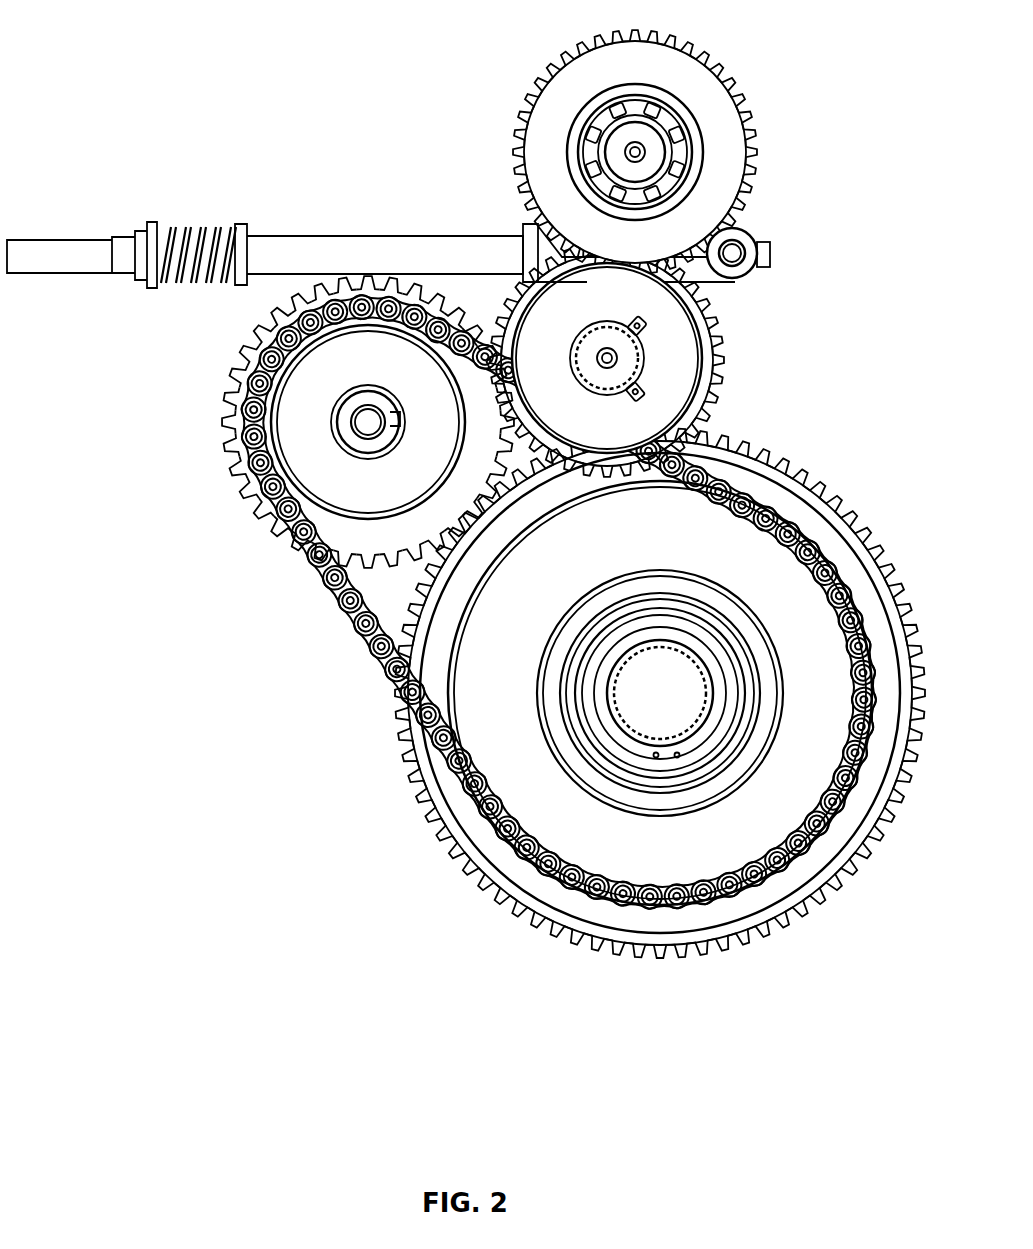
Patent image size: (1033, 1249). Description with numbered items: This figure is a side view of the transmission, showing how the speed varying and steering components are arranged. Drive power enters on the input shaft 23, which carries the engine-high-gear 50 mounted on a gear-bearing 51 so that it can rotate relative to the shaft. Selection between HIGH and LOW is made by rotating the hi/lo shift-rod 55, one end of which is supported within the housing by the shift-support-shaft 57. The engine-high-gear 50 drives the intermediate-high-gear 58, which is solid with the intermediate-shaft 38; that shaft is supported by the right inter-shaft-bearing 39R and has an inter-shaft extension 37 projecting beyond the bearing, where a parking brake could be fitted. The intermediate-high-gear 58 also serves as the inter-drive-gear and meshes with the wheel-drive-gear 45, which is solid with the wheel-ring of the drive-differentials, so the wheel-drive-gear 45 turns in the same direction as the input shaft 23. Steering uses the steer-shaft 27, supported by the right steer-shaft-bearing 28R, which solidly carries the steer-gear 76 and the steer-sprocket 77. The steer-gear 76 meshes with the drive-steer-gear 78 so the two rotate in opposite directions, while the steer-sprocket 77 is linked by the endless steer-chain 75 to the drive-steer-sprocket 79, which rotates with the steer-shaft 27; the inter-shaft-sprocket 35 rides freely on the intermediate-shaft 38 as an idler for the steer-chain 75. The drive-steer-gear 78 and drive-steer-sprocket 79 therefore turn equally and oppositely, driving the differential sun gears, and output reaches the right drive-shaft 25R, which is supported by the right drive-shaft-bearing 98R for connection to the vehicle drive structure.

The input shaft 23 is at (637, 153).
The right drive-shaft 25R is at (820, 702).
The steer-shaft 27 is at (356, 410).
The right steer-shaft-bearing 28R is at (368, 422).
The inter-shaft-sprocket 35 is at (521, 303).
The inter-shaft extension 37 is at (645, 357).
The intermediate-shaft 38 is at (640, 368).
The right inter-shaft-bearing 39R is at (607, 358).
The wheel-drive-gear 45 is at (462, 858).
The engine-high-gear 50 is at (727, 71).
The gear-bearing 51 is at (662, 110).
The hi/lo shift-rod 55 is at (62, 250).
The shift-support-shaft 57 is at (745, 236).
The intermediate-high-gear 58 is at (715, 305).
The steer-chain 75 is at (368, 643).
The steer-gear 76 is at (262, 522).
The steer-sprocket 77 is at (373, 540).
The drive-steer-gear 78 is at (427, 800).
The drive-steer-sprocket 79 is at (450, 680).
The right drive-shaft-bearing 98R is at (613, 587).